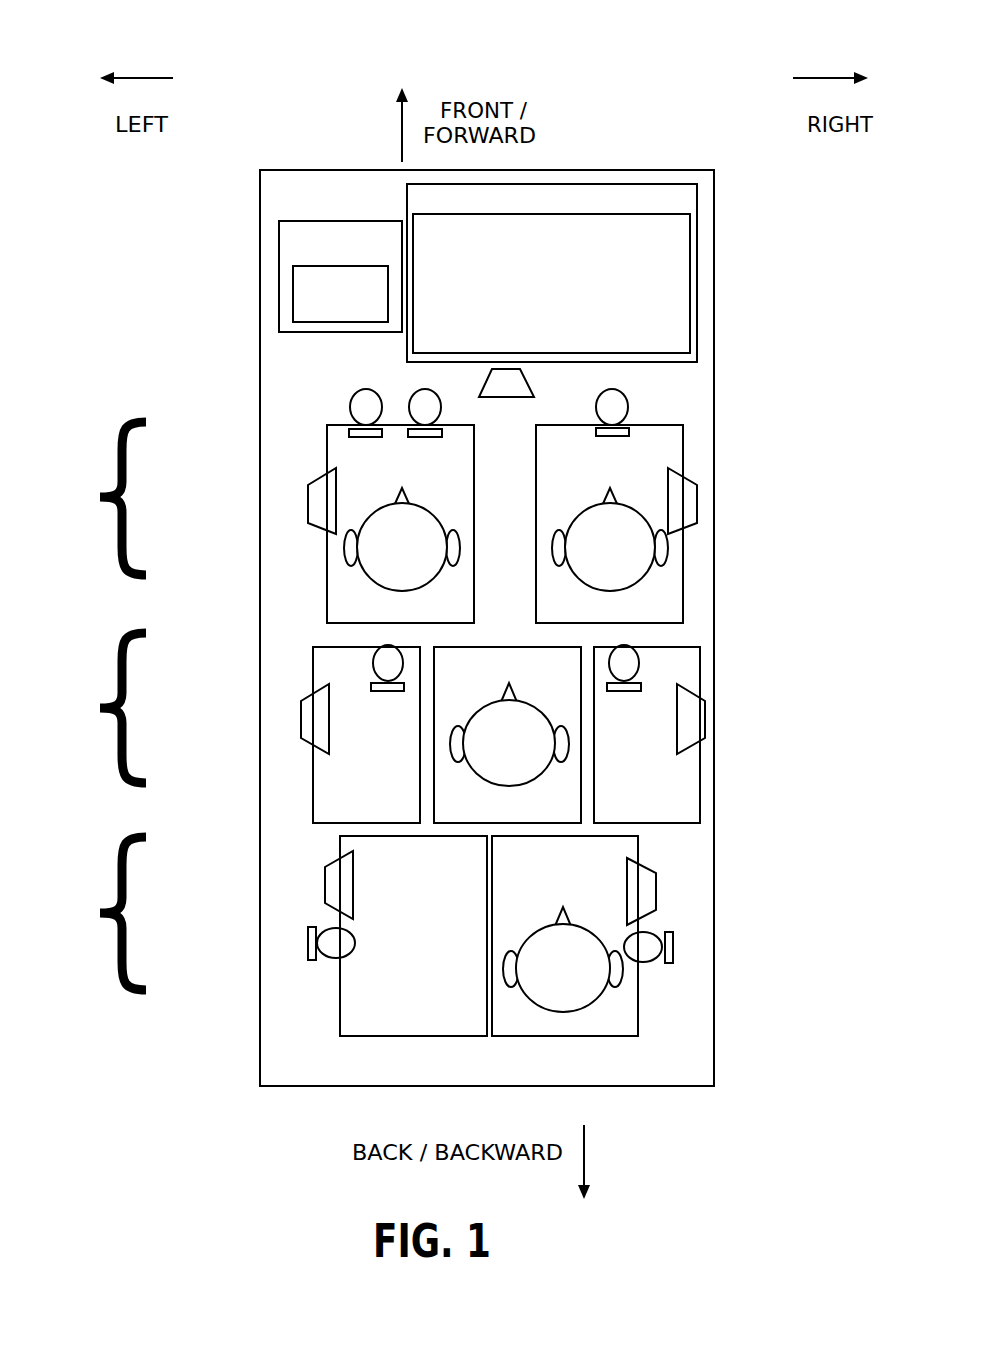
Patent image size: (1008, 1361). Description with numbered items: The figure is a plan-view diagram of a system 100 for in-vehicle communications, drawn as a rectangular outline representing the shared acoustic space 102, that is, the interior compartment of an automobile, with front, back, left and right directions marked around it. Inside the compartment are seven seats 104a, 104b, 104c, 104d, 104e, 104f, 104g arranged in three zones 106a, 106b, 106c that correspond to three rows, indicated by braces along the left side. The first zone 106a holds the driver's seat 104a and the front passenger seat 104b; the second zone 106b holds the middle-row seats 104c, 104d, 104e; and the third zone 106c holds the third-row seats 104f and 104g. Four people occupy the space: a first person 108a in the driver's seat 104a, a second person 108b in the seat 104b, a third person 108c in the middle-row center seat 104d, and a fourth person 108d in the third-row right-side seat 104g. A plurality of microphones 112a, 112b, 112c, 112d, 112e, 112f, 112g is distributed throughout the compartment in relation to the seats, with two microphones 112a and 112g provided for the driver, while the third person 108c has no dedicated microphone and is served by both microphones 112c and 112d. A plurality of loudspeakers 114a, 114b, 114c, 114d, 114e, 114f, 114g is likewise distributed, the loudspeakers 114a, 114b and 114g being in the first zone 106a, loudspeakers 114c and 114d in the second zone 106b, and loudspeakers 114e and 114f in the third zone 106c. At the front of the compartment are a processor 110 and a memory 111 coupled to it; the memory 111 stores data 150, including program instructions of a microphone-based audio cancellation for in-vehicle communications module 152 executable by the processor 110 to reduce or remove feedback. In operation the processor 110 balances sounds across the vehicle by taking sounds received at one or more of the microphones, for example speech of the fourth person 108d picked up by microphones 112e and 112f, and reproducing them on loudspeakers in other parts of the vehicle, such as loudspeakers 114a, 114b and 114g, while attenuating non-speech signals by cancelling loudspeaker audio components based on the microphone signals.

The system 100 is at (436, 545).
The shared acoustic space 102 is at (250, 322).
The seat 104a is at (427, 617).
The seat 104b is at (635, 617).
The seat 104c is at (392, 817).
The seat 104d is at (532, 817).
The seat 104e is at (670, 817).
The seat 104f is at (438, 866).
The seat 104g is at (590, 866).
The first zone 106a is at (91, 498).
The second zone 106b is at (91, 708).
The third zone 106c is at (91, 913).
The first person 108a is at (344, 551).
The second person 108b is at (667, 550).
The third person 108c is at (565, 757).
The fourth person 108d is at (574, 1010).
The processor 110 is at (697, 238).
The memory 111 is at (340, 220).
The microphone 112a is at (351, 411).
The microphone 112b is at (628, 409).
The microphone 112c is at (373, 661).
The microphone 112d is at (639, 662).
The microphone 112e is at (332, 958).
The microphone 112f is at (649, 964).
The microphone 112g is at (410, 398).
The loudspeaker 114a is at (308, 503).
The loudspeaker 114b is at (697, 509).
The loudspeaker 114c is at (301, 719).
The loudspeaker 114d is at (705, 724).
The loudspeaker 114e is at (325, 886).
The loudspeaker 114f is at (656, 892).
The loudspeaker 114g is at (531, 383).
The data 150 is at (360, 317).
The microphone-based audio cancellation for in-vehicle communications module 152 is at (570, 336).